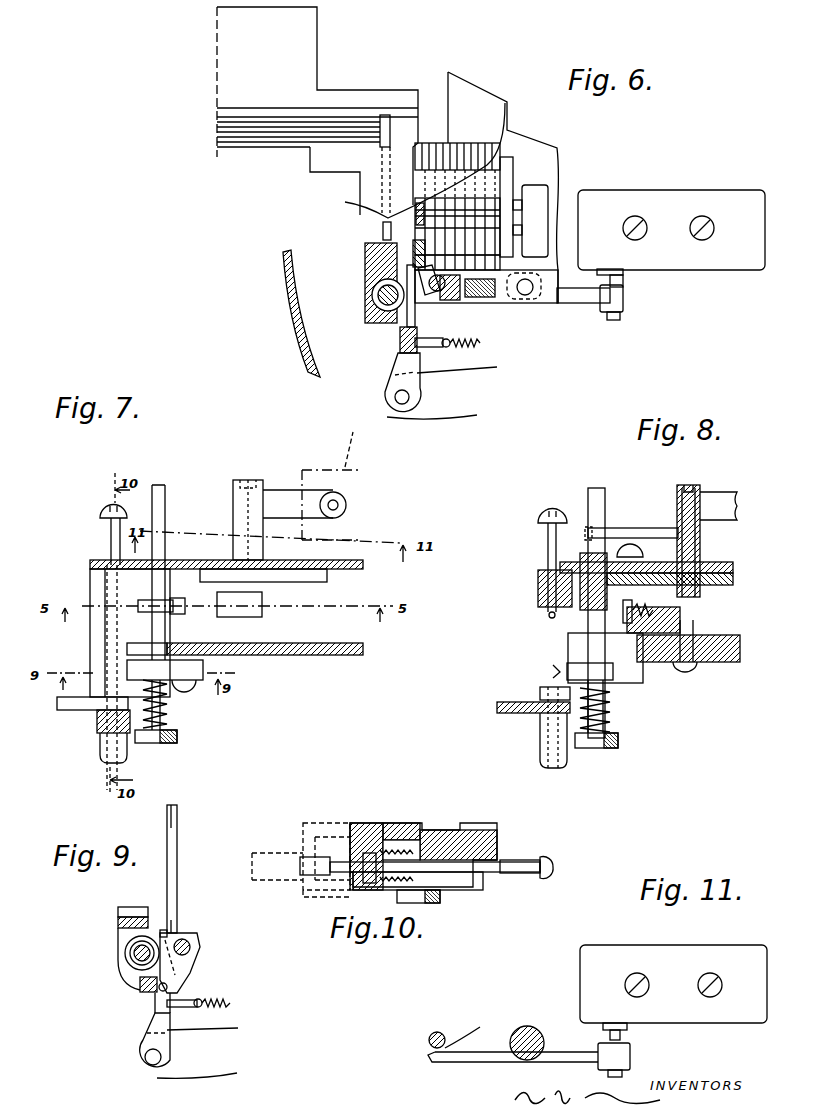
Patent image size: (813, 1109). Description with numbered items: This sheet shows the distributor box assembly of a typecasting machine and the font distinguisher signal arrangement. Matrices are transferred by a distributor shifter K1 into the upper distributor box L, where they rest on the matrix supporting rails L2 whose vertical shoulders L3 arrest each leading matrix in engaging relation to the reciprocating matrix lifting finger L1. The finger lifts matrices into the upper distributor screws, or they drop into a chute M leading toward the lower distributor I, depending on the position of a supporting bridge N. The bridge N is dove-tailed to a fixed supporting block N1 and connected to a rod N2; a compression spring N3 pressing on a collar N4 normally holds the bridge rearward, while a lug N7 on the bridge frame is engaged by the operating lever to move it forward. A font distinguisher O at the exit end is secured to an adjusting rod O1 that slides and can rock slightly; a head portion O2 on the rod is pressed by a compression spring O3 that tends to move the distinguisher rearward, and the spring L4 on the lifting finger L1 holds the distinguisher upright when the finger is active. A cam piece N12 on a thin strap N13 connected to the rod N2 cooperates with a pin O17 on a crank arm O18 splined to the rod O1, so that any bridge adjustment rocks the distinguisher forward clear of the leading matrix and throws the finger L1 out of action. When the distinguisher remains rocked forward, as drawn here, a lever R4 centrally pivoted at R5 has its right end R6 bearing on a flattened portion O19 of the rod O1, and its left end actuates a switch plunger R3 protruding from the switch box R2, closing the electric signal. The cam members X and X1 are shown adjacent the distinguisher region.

In FIG. 6, the lower main character distributor I is at (300, 63).
In FIG. 6, the upper distributor box L is at (548, 160).
In FIG. 7, the upper distributor box L is at (352, 562).
In FIG. 8, the upper distributor box L is at (717, 562).
In FIG. 6, the matrix lifting finger L1 is at (413, 327).
In FIG. 7, the matrix lifting finger L1 is at (148, 608).
In FIG. 8, the matrix lifting finger L1 is at (573, 625).
In FIG. 9, the matrix lifting finger L1 is at (163, 1027).
In FIG. 6, the matrix supporting rails L2 is at (445, 270).
In FIG. 6, the vertical shoulders L3 is at (412, 157).
In FIG. 6, the spring L4 is at (473, 347).
In FIG. 9, the spring L4 is at (217, 1000).
In FIG. 6, the distributor shifter K1 is at (540, 195).
In FIG. 6, the chute M is at (292, 317).
In FIG. 6, the supporting bridge N is at (377, 247).
In FIG. 7, the supporting bridge N is at (97, 600).
In FIG. 9, the supporting bridge N is at (128, 907).
In FIG. 10, the supporting bridge N is at (400, 815).
In FIG. 6, the fixed supporting block N1 is at (387, 318).
In FIG. 8, the fixed supporting block N1 is at (538, 589).
In FIG. 9, the fixed supporting block N1 is at (118, 921).
In FIG. 10, the fixed supporting block N1 is at (473, 843).
In FIG. 6, the rod N2 is at (393, 300).
In FIG. 7, the rod N2 is at (110, 537).
In FIG. 8, the rod N2 is at (548, 540).
In FIG. 9, the rod N2 is at (132, 950).
In FIG. 10, the rod N2 is at (523, 862).
In FIG. 7, the compression spring N3 is at (97, 662).
In FIG. 9, the compression spring N3 is at (130, 960).
In FIG. 10, the compression spring N3 is at (380, 857).
In FIG. 7, the collar N4 is at (120, 690).
In FIG. 8, the collar N4 is at (543, 693).
In FIG. 10, the collar N4 is at (368, 857).
In FIG. 7, the lug N7 is at (63, 703).
In FIG. 8, the lug N7 is at (520, 718).
In FIG. 10, the lug N7 is at (300, 840).
In FIG. 8, the cam piece N12 is at (563, 627).
In FIG. 9, the cam piece N12 is at (140, 985).
In FIG. 10, the cam piece N12 is at (350, 897).
In FIG. 6, the thin strap N13 is at (390, 327).
In FIG. 9, the thin strap N13 is at (142, 978).
In FIG. 10, the thin strap N13 is at (477, 887).
In FIG. 6, the font distinguisher O is at (410, 281).
In FIG. 7, the font distinguisher O is at (143, 608).
In FIG. 8, the font distinguisher O is at (577, 622).
In FIG. 9, the font distinguisher O is at (163, 930).
In FIG. 6, the adjusting rod O1 is at (437, 292).
In FIG. 7, the adjusting rod O1 is at (160, 502).
In FIG. 8, the adjusting rod O1 is at (600, 718).
In FIG. 9, the adjusting rod O1 is at (192, 947).
In FIG. 11, the adjusting rod O1 is at (435, 1033).
In FIG. 7, the head portion O2 is at (153, 737).
In FIG. 8, the head portion O2 is at (597, 742).
In FIG. 7, the compression spring O3 is at (168, 720).
In FIG. 8, the compression spring O3 is at (610, 723).
In FIG. 8, the pin O17 is at (555, 670).
In FIG. 9, the pin O17 is at (160, 993).
In FIG. 8, the crank arm O18 is at (583, 672).
In FIG. 9, the crank arm O18 is at (177, 970).
In FIG. 11, the flattened portion O19 is at (469, 1029).
In FIG. 6, the switch box R2 is at (717, 188).
In FIG. 7, the switch box R2 is at (331, 483).
In FIG. 11, the switch box R2 is at (673, 984).
In FIG. 6, the switch plunger R3 is at (613, 280).
In FIG. 11, the switch plunger R3 is at (622, 1034).
In FIG. 6, the lever R4 is at (588, 295).
In FIG. 7, the lever R4 is at (285, 502).
In FIG. 8, the lever R4 is at (720, 502).
In FIG. 11, the lever R4 is at (557, 1060).
In FIG. 6, the pivot R5 is at (530, 295).
In FIG. 7, the pivot R5 is at (240, 508).
In FIG. 8, the pivot R5 is at (687, 520).
In FIG. 11, the pivot R5 is at (527, 1027).
In FIG. 7, the right end of lever R6 is at (170, 530).
In FIG. 8, the right end of lever R6 is at (610, 530).
In FIG. 11, the right end of lever R6 is at (430, 1057).
In FIG. 6, the cam lever X is at (417, 160).
In FIG. 6, the cam arm X1 is at (385, 224).